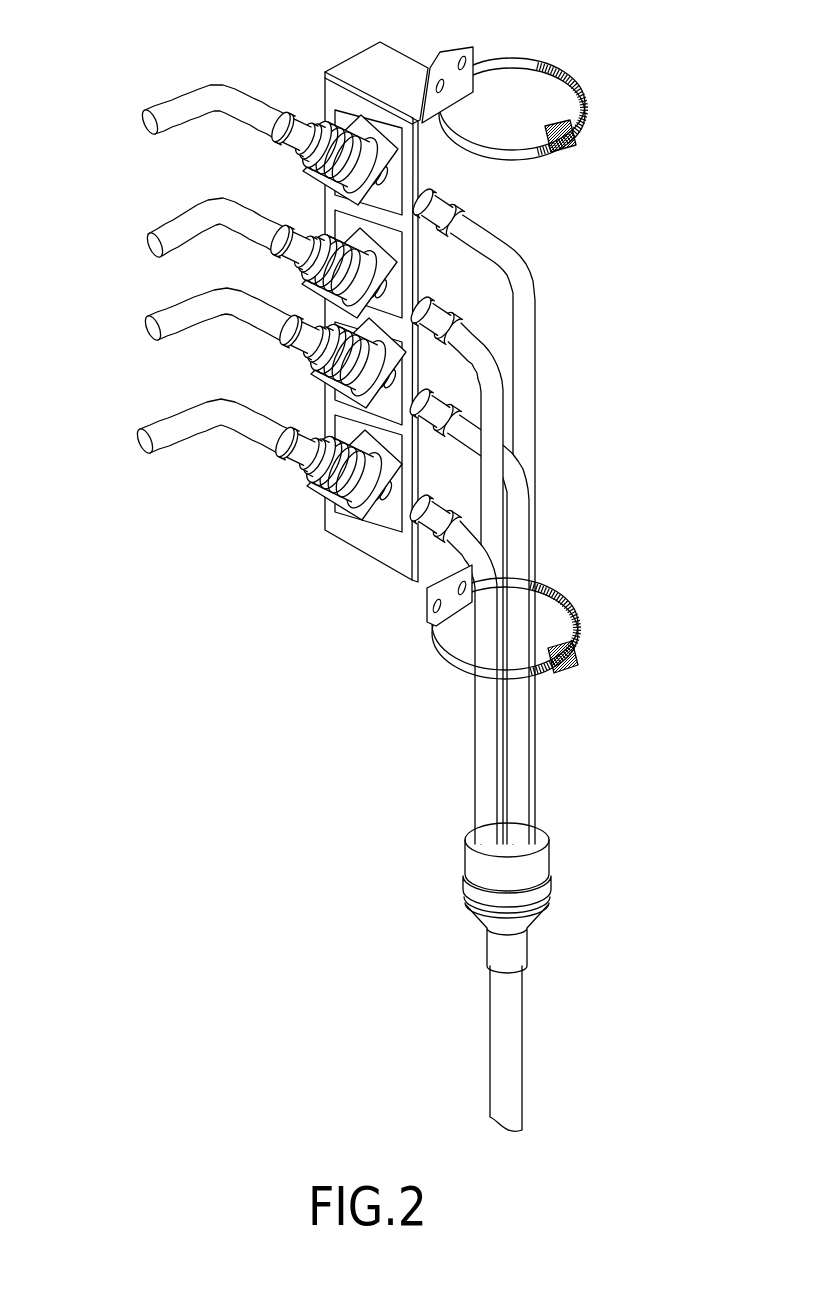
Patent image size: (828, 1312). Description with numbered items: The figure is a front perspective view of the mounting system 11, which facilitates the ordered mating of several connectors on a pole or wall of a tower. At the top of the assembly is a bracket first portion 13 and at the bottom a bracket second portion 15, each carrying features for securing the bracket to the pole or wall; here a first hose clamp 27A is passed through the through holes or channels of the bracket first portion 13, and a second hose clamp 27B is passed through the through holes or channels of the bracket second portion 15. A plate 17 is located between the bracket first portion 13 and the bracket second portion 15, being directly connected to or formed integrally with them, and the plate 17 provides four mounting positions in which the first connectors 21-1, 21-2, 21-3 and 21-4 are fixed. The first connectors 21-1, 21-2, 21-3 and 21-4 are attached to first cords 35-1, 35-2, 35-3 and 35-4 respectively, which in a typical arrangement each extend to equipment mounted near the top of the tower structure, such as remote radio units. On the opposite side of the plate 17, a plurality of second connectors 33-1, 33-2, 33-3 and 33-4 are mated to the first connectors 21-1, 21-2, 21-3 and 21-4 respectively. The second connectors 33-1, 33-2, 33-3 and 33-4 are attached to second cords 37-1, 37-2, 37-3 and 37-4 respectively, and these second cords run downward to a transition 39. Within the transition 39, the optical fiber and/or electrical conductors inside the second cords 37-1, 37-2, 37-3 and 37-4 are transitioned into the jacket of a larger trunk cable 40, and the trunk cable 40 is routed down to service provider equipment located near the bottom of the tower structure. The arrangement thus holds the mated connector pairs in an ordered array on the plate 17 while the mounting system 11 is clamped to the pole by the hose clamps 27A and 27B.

The mounting system 11 is at (373, 567).
The bracket first portion 13 is at (445, 68).
The bracket second portion 15 is at (447, 616).
The plate 17 is at (378, 550).
The first connector 21-1 is at (299, 88).
The first connector 21-2 is at (286, 210).
The first connector 21-3 is at (269, 363).
The first connector 21-4 is at (267, 491).
The first hose clamp 27A is at (514, 58).
The second hose clamp 27B is at (470, 670).
The second connector 33-1 is at (471, 181).
The second connector 33-2 is at (448, 298).
The second connector 33-3 is at (463, 390).
The second connector 33-4 is at (448, 495).
The first cord 35-1 is at (172, 110).
The first cord 35-2 is at (175, 232).
The first cord 35-3 is at (178, 318).
The first cord 35-4 is at (170, 430).
The second cord 37-1 is at (500, 245).
The second cord 37-2 is at (465, 350).
The second cord 37-3 is at (513, 455).
The second cord 37-4 is at (483, 557).
The transition 39 is at (540, 855).
The trunk cable 40 is at (505, 1015).